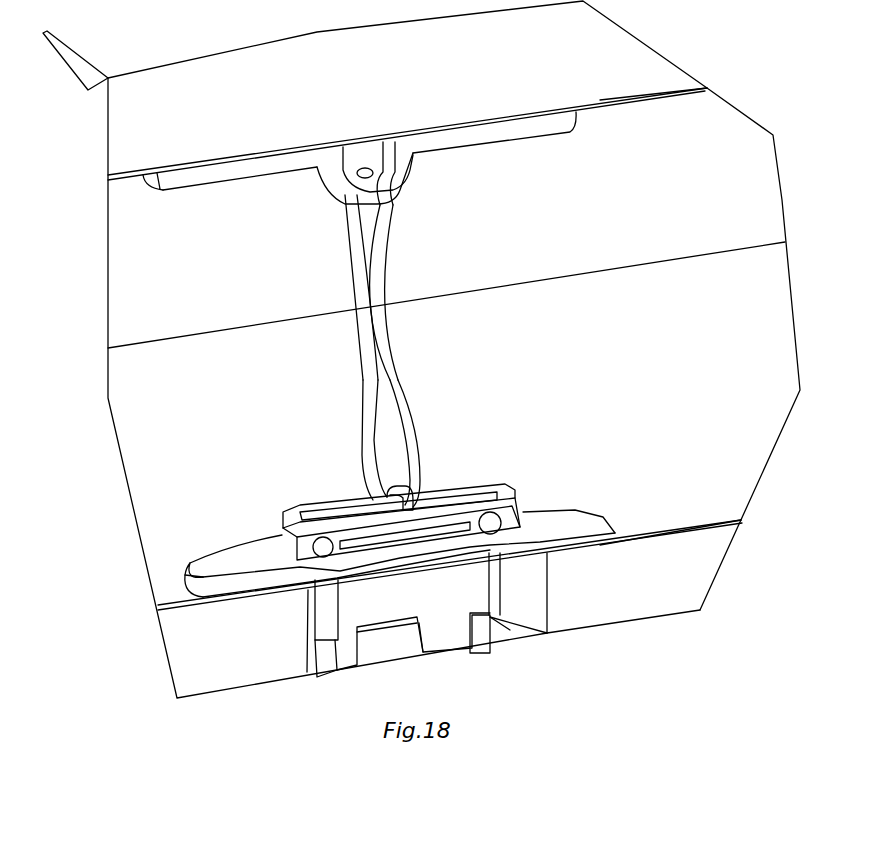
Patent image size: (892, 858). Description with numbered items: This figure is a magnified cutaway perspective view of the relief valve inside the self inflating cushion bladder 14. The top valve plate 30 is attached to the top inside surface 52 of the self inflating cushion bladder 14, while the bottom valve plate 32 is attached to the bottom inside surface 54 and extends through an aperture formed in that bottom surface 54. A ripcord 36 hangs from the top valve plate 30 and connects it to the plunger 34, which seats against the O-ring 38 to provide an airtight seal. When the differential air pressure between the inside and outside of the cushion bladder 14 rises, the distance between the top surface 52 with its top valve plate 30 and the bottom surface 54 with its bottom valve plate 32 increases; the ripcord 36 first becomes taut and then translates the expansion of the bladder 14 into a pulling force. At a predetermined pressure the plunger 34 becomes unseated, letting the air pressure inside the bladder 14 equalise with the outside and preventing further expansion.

The self inflating cushion bladder 14 is at (157, 490).
The top valve plate 30 is at (543, 125).
The bottom valve plate 32 is at (605, 528).
The plunger 34 is at (443, 503).
The ripcord 36 is at (383, 257).
The O-ring 38 is at (517, 510).
The top inside surface 52 is at (632, 105).
The bottom inside surface 54 is at (695, 523).